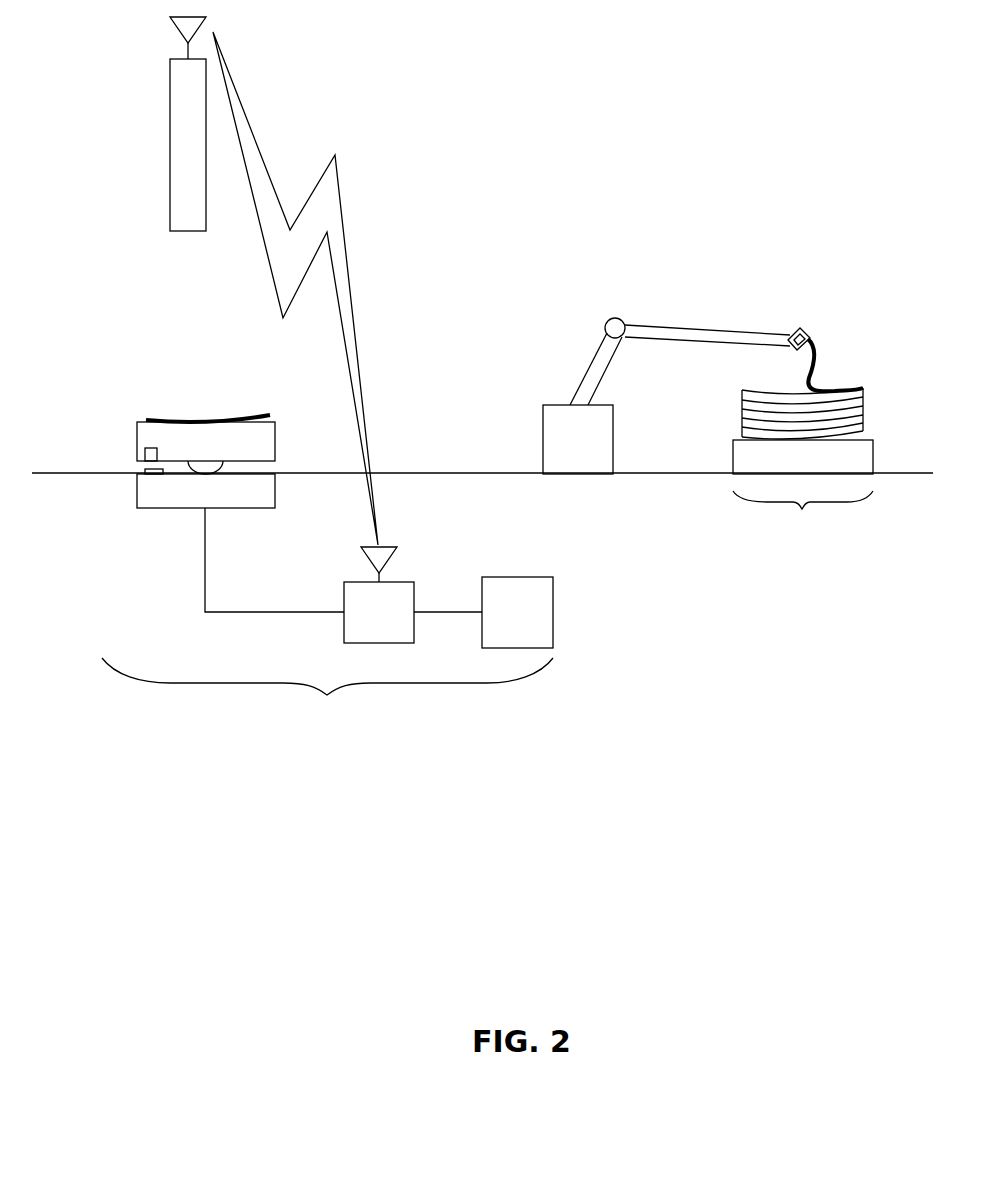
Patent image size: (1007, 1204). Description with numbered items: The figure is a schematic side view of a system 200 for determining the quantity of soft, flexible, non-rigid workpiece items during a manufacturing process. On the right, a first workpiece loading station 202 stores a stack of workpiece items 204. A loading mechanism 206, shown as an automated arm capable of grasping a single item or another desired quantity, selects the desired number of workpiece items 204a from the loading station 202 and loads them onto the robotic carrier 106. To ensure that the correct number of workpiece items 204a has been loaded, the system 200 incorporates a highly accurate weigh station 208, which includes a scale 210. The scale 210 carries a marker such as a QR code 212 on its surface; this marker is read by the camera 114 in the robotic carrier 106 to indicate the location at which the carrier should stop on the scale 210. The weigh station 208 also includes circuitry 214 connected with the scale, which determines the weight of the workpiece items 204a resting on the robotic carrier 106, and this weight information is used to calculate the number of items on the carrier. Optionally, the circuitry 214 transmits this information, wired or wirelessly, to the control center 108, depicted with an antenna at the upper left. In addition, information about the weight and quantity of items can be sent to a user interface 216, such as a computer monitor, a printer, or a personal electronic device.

The system 200 is at (521, 130).
The control center 108 is at (170, 108).
The robotic carrier 106 is at (275, 438).
The workpiece items 204a is at (157, 413).
The camera 114 is at (137, 453).
The QR code 212 is at (138, 471).
The scale 210 is at (155, 508).
The circuitry 214 is at (360, 625).
The user interface 216 is at (498, 625).
The weigh station 208 is at (170, 683).
The loading mechanism 206 is at (592, 358).
The workpiece items 204 is at (867, 415).
The first workpiece loading station 202 is at (847, 502).